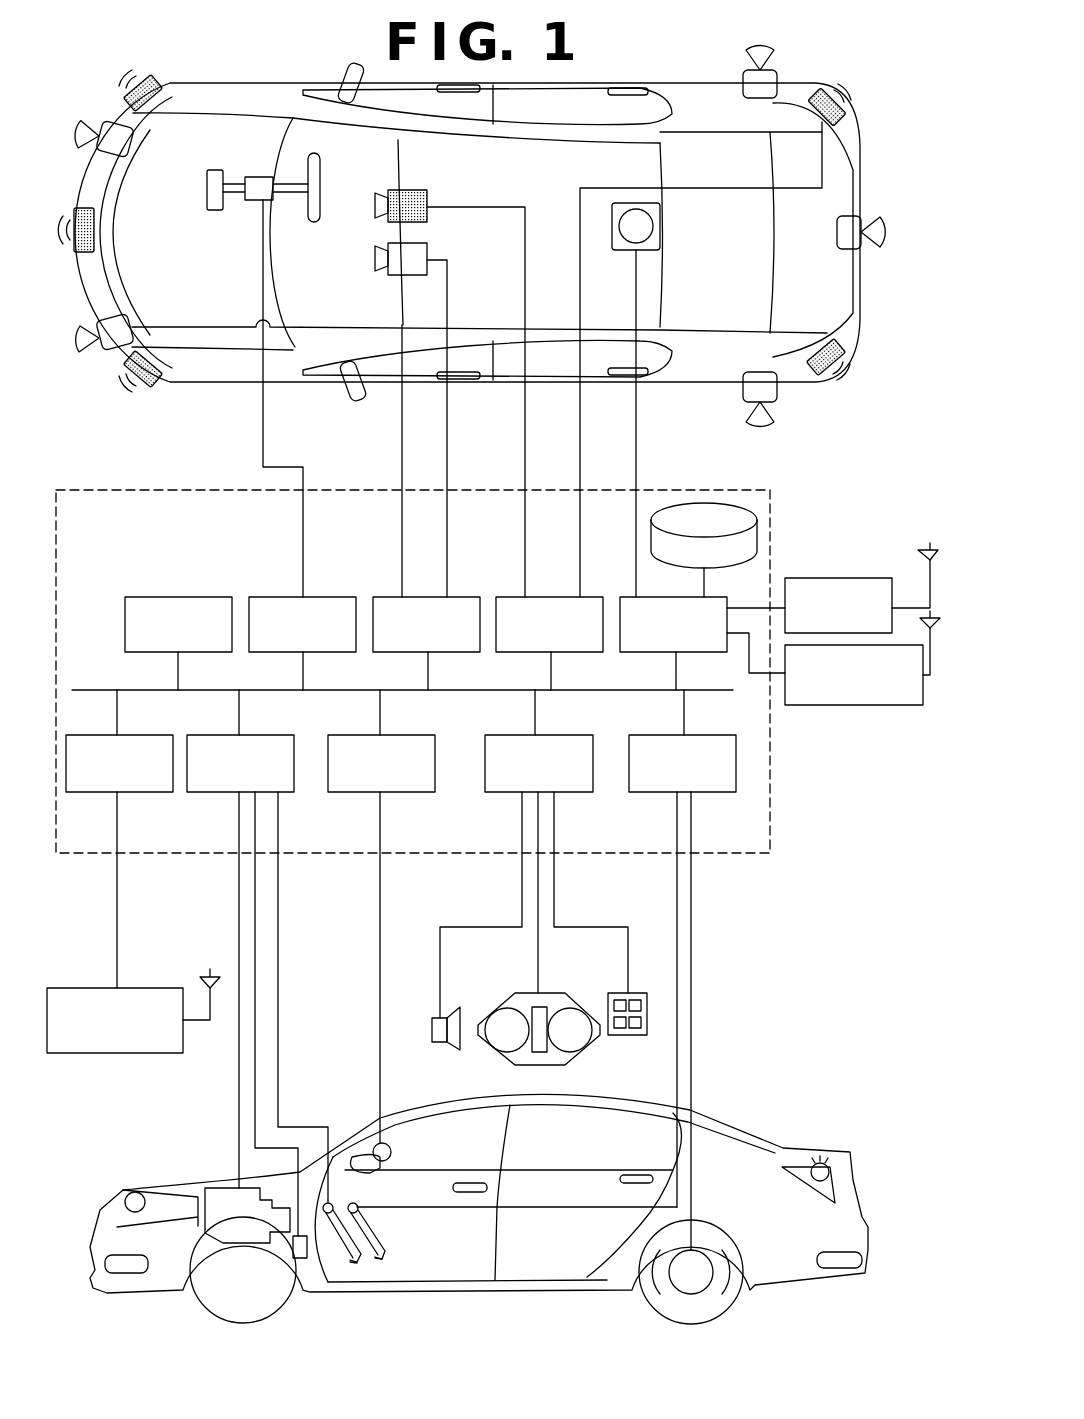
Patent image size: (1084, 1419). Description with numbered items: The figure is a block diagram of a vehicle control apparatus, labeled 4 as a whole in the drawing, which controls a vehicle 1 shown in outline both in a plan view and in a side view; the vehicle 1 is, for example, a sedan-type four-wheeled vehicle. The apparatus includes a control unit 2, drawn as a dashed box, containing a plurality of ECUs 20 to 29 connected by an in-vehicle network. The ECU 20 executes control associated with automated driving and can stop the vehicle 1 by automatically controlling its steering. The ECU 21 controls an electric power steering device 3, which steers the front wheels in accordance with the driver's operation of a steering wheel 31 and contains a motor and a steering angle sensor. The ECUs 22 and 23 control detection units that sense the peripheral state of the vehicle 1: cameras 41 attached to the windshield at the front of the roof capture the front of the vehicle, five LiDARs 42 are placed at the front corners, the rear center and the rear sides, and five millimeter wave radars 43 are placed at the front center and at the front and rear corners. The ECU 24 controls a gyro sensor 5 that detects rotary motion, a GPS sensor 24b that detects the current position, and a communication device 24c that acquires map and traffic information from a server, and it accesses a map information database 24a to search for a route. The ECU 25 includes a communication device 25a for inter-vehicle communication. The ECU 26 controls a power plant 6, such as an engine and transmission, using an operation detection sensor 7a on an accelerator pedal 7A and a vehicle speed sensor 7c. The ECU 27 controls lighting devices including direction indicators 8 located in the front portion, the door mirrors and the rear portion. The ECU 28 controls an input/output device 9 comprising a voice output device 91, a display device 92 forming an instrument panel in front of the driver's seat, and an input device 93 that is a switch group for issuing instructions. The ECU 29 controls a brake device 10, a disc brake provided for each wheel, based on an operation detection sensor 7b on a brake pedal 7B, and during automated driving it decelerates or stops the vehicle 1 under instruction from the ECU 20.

The vehicle 1 is at (866, 147).
The control unit 2 is at (752, 858).
The electric power steering device 3 is at (215, 210).
The vehicle control system 4 is at (96, 41).
The gyro sensor 5 is at (660, 225).
The power plant 6 is at (208, 1185).
The operation detection sensor 7a is at (345, 1140).
The operation detection sensor 7b is at (359, 1208).
The vehicle speed sensor 7c is at (301, 1260).
The accelerator pedal 7A is at (358, 1262).
The brake pedal 7B is at (384, 1255).
The direction indicator 8 is at (125, 1197).
The input/output device 9 is at (527, 950).
The brake device 10 is at (695, 1294).
The ECU 20 is at (210, 597).
The ECU 21 is at (335, 597).
The ECU 22 is at (426, 597).
The ECU 23 is at (550, 597).
The ECU 24 is at (616, 597).
The map information database 24a is at (708, 502).
The GPS sensor 24b is at (872, 578).
The communication device 24c is at (855, 705).
The ECU 25 is at (150, 797).
The communication device 25a is at (120, 1053).
The ECU 26 is at (222, 797).
The ECU 27 is at (412, 797).
The ECU 28 is at (577, 797).
The ECU 29 is at (713, 797).
The steering wheel 31 is at (314, 222).
The camera 41 is at (430, 195).
The LiDAR 42 is at (124, 160).
The millimeter wave radar 43 is at (158, 82).
The voice output device 91 is at (432, 1025).
The display device 92 is at (495, 1005).
The input device 93 is at (625, 1035).